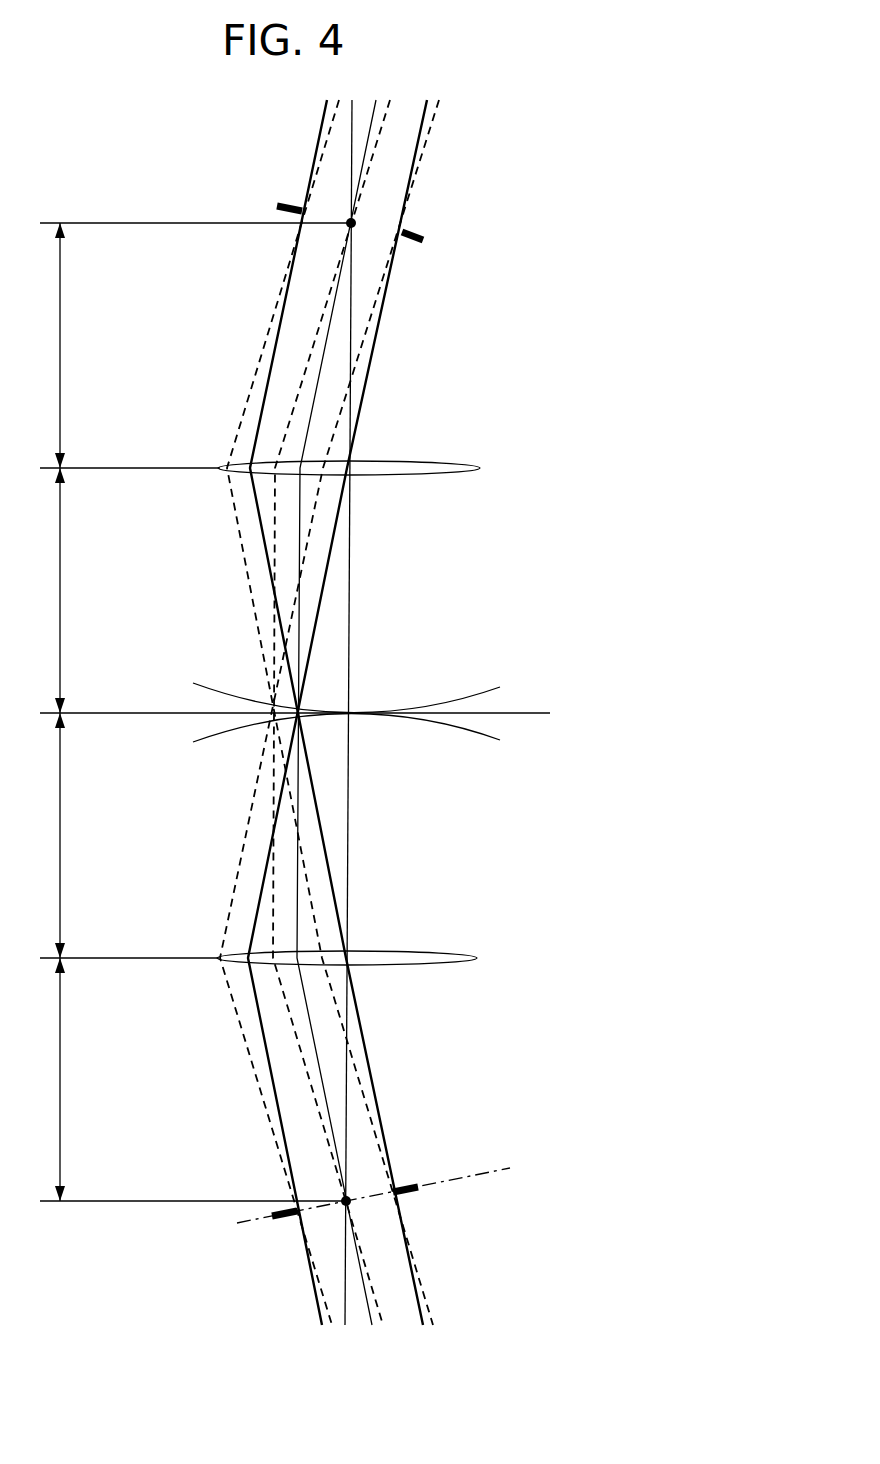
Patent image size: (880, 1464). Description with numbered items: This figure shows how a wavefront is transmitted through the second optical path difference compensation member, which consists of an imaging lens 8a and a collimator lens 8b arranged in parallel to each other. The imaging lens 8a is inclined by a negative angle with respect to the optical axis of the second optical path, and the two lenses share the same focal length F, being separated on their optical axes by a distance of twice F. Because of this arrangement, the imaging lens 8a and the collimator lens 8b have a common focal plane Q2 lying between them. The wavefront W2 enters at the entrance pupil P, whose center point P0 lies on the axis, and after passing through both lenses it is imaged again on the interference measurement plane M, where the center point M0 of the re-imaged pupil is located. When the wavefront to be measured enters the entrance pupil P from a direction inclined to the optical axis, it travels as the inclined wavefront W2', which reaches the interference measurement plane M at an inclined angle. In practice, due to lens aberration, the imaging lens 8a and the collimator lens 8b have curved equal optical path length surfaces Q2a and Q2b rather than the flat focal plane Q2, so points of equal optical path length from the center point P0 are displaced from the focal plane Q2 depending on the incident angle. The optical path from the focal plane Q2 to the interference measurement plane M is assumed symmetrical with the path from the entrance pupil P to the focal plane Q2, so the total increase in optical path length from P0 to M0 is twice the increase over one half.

The imaging lens 8a is at (447, 475).
The collimator lens 8b is at (447, 950).
The wavefront W2 is at (324, 712).
The wavefront W2' is at (383, 712).
The entrance pupil P is at (337, 206).
The center point P0 is at (351, 223).
The focal plane Q2 is at (317, 713).
The equal optical path length surface Q2a is at (364, 685).
The equal optical path length surface Q2b is at (364, 743).
The interference measurement plane M is at (394, 1187).
The center point M0 is at (346, 1201).
The focal length F is at (29, 706).